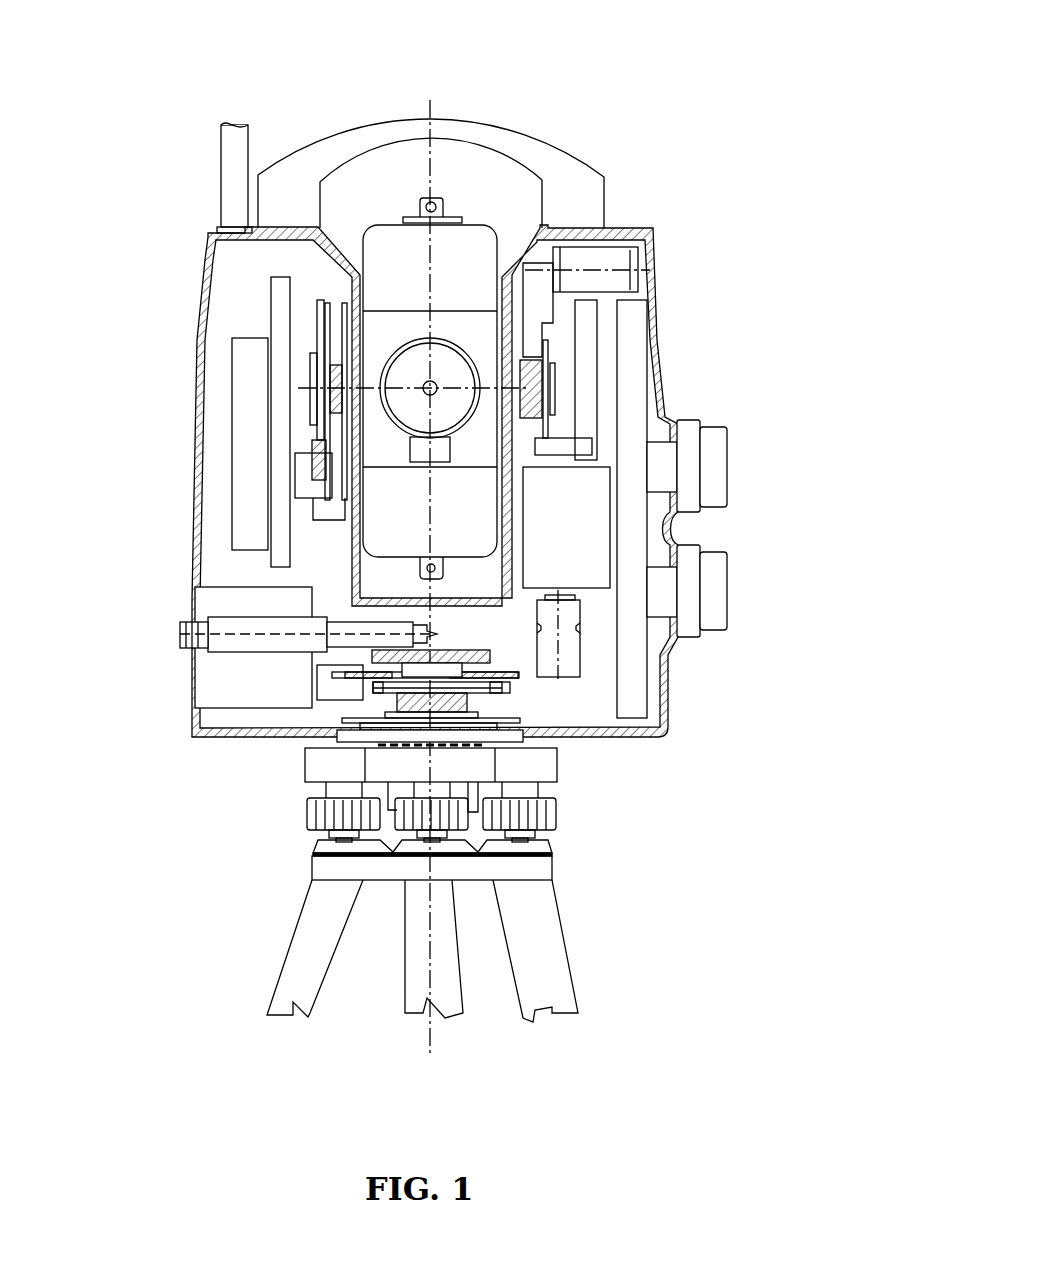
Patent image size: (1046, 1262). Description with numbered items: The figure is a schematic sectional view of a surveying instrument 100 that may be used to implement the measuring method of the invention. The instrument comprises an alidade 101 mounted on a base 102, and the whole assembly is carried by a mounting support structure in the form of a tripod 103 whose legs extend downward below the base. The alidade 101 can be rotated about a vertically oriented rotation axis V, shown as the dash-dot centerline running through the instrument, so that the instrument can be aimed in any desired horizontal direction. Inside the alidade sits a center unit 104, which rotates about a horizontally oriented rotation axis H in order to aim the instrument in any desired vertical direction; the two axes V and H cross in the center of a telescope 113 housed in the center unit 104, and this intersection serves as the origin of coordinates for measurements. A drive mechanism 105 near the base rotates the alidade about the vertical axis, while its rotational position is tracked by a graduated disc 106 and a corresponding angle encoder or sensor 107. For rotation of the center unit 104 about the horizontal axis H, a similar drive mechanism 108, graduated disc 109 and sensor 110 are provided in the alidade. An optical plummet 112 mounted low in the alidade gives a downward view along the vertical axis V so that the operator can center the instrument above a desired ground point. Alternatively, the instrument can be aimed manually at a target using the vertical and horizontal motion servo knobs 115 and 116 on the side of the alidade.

The surveying instrument 100 is at (640, 118).
The alidade 101 is at (672, 738).
The base 102 is at (537, 765).
The tripod 103 is at (540, 927).
The center unit 104 is at (470, 262).
The drive mechanism 105 is at (570, 660).
The graduated disc 106 is at (375, 685).
The angle encoder or sensor 107 is at (325, 688).
The drive mechanism 108 is at (632, 252).
The graduated disc 109 is at (322, 442).
The sensor 110 is at (303, 487).
The optical plummet 112 is at (190, 624).
The telescope 113 is at (402, 372).
The vertical motion servo knob 115 is at (712, 453).
The horizontal motion servo knob 116 is at (712, 572).
The vertically oriented rotation axis V is at (430, 107).
The horizontally oriented rotation axis H is at (562, 388).